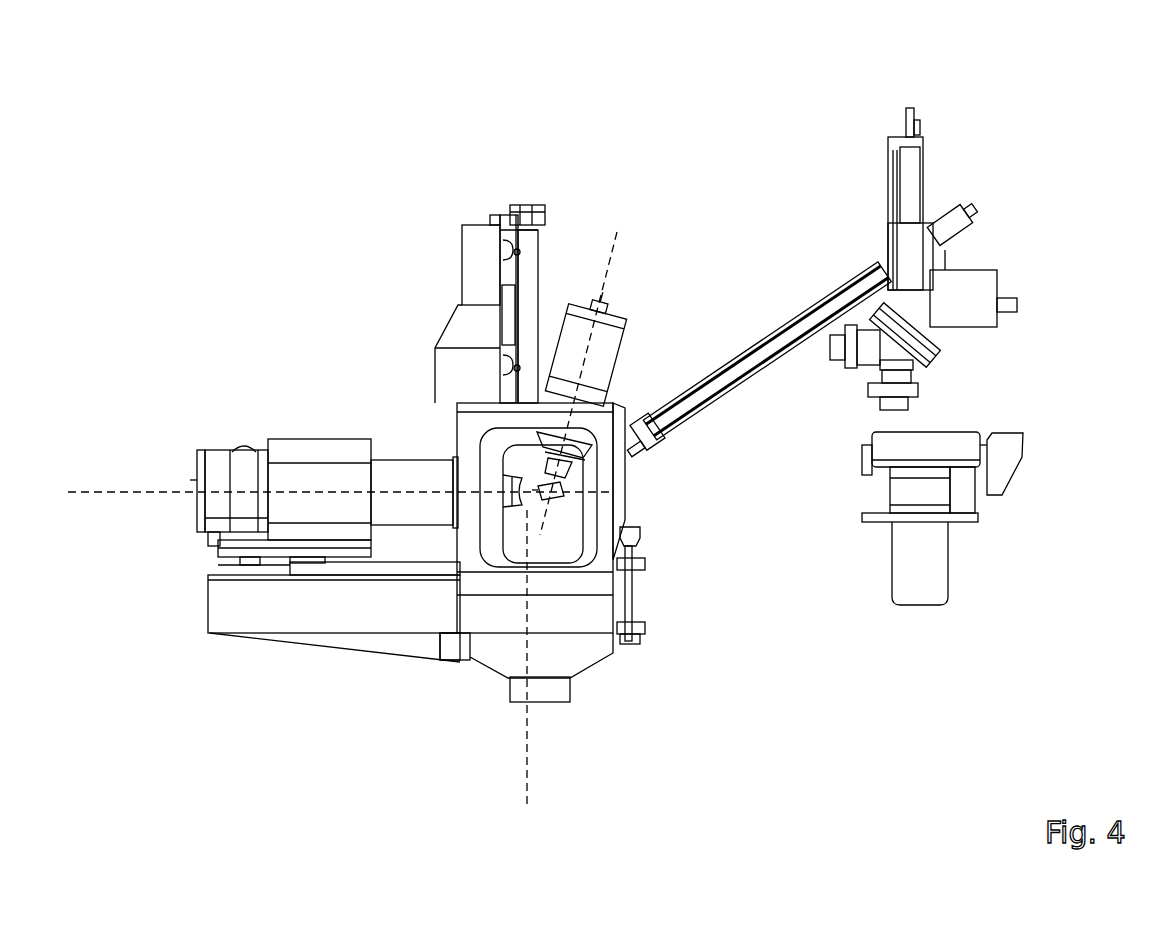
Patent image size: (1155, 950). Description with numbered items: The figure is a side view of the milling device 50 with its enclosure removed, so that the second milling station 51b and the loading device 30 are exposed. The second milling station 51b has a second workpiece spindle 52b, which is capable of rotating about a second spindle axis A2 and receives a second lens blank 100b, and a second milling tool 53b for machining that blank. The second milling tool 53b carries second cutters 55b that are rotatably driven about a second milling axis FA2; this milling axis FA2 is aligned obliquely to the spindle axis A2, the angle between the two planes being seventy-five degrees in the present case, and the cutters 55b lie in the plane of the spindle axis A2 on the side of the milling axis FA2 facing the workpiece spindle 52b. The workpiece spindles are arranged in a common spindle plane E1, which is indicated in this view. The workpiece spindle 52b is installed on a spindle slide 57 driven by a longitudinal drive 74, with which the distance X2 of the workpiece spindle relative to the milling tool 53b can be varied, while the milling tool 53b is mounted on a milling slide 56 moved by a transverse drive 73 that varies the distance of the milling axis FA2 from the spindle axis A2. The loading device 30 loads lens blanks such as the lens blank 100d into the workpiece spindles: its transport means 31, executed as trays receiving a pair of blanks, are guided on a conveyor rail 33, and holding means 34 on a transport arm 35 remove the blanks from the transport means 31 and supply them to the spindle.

The loading device 30 is at (914, 108).
The transport means 31 is at (945, 448).
The conveyor rail 33 is at (963, 490).
The holding means 34 is at (912, 375).
The transport arm 35 is at (775, 350).
The milling device 50 is at (1042, 130).
The second milling station 51b is at (545, 532).
The second workpiece spindle 52b is at (290, 455).
The second milling tool 53b is at (605, 348).
The second cutters 55b is at (557, 507).
The milling slide 56 is at (530, 240).
The spindle slide 57 is at (258, 550).
The transverse drive 73 is at (505, 250).
The longitudinal drive 74 is at (357, 570).
The second lens blank 100b is at (522, 507).
The lens blank 100d is at (922, 387).
The second spindle axis A2 is at (340, 506).
The distance X2 is at (330, 583).
The spindle plane E1 is at (525, 671).
The second milling axis FA2 is at (584, 372).